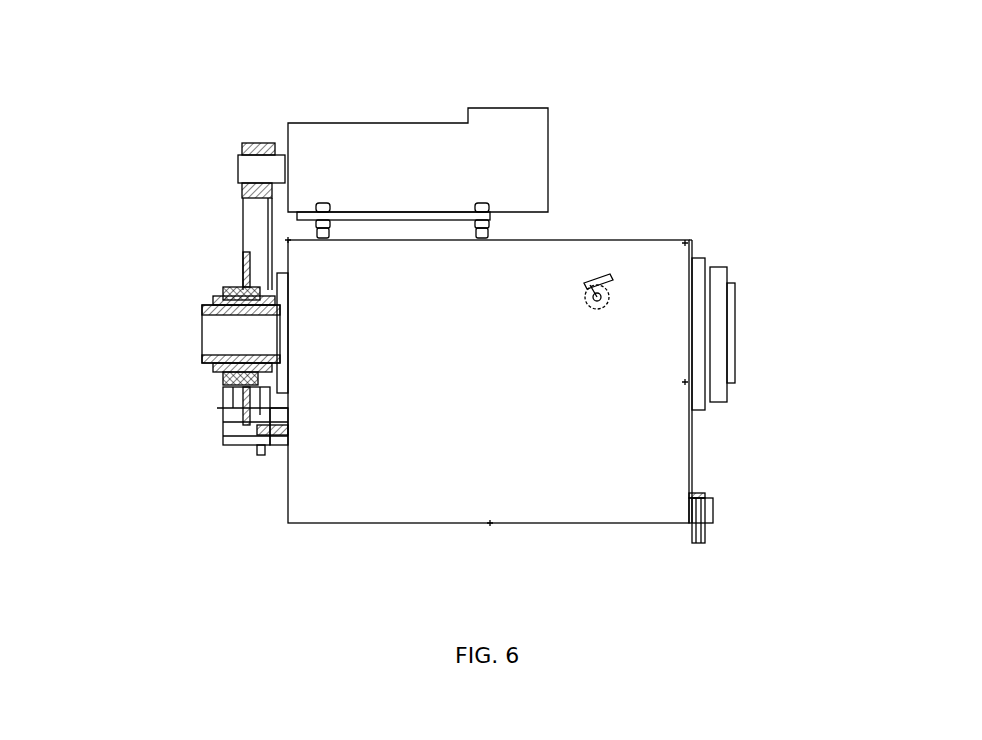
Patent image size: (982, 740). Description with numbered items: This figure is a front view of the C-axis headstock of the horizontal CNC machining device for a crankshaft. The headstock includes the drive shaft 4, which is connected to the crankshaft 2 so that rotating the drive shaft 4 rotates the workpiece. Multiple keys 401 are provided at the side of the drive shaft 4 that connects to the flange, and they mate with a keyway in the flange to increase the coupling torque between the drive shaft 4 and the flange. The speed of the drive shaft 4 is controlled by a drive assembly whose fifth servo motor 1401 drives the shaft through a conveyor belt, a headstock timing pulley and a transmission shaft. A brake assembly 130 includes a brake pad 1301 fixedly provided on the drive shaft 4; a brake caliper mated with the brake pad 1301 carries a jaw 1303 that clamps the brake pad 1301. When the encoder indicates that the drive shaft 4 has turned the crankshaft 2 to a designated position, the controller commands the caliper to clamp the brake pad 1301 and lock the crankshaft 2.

The fifth servo motor 1401 is at (383, 106).
The crankshaft 2 is at (217, 169).
The brake pad 1301 is at (171, 219).
The drive shaft 4 is at (184, 342).
The jaw 1303 is at (146, 437).
The brake assembly 130 is at (173, 472).
The keys 401 is at (808, 308).